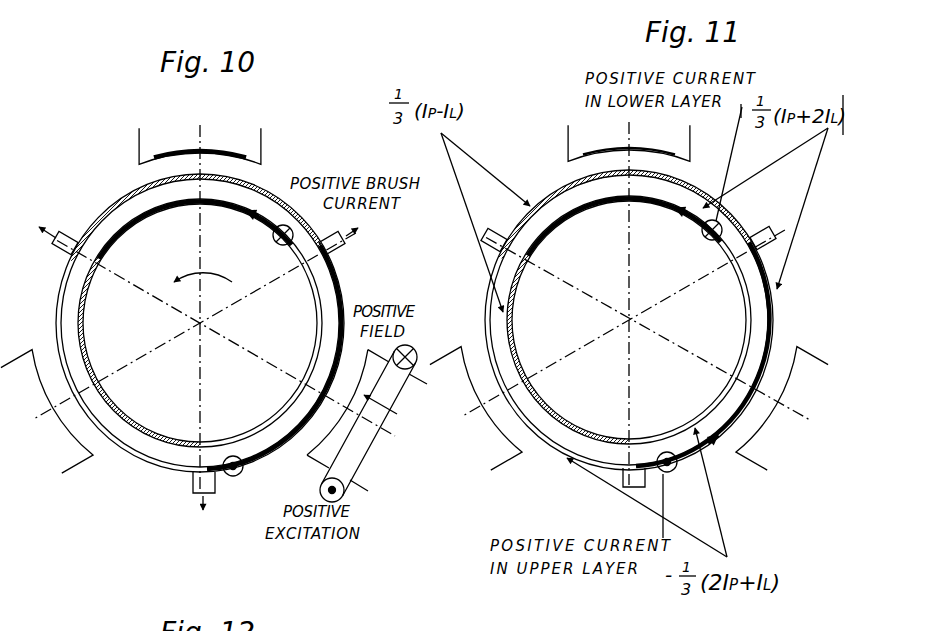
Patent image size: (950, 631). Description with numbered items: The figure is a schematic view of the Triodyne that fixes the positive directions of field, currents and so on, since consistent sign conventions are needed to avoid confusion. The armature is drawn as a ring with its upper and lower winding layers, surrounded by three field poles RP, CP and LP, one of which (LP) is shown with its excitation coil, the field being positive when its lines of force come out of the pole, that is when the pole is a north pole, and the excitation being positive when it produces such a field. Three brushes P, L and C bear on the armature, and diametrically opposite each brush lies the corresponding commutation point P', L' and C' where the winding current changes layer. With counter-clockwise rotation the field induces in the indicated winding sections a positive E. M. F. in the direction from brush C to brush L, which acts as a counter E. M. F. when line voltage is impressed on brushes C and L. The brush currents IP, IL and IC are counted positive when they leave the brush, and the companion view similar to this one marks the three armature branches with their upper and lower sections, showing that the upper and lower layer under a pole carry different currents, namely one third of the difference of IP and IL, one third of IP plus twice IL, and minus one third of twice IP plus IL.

In FIG. 10, the upper field pole RP is at (200, 132).
In FIG. 10, the left field pole CP is at (47, 412).
In FIG. 10, the right field pole with excitation coil LP is at (367, 423).
In FIG. 10, the brush P is at (46, 230).
In FIG. 11, the brush P is at (492, 230).
In FIG. 10, the brush L is at (345, 238).
In FIG. 11, the brush L is at (766, 230).
In FIG. 10, the brush C is at (218, 494).
In FIG. 11, the brush C is at (650, 480).
In FIG. 10, the brush current of brush P IP is at (36, 244).
In FIG. 10, the brush current of brush L IL is at (353, 245).
In FIG. 10, the current at brush C IC is at (214, 505).
In FIG. 10, the commutation point opposite brush P P' is at (184, 423).
In FIG. 11, the commutation point opposite brush P P' is at (644, 423).
In FIG. 10, the commutation point opposite brush L L' is at (113, 256).
In FIG. 11, the commutation point opposite brush L L' is at (543, 255).
In FIG. 10, the commutation point opposite brush C C' is at (278, 248).
In FIG. 11, the commutation point opposite brush C C' is at (708, 244).